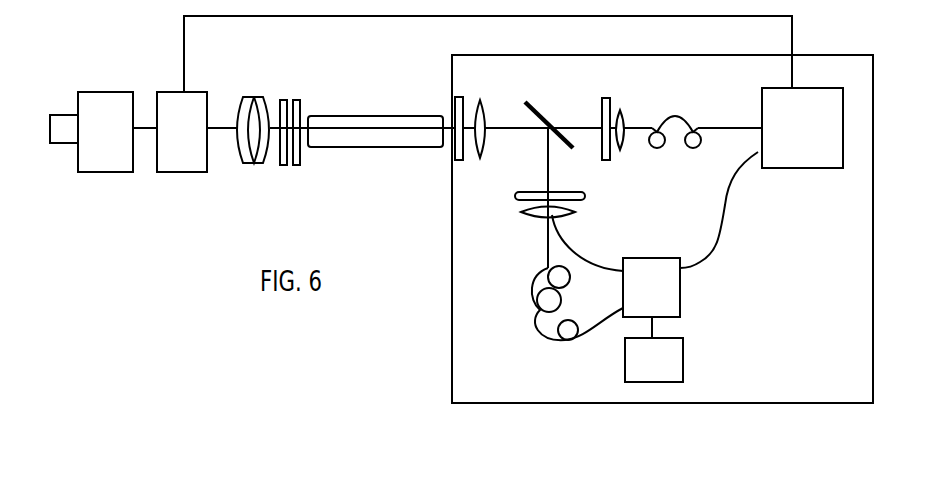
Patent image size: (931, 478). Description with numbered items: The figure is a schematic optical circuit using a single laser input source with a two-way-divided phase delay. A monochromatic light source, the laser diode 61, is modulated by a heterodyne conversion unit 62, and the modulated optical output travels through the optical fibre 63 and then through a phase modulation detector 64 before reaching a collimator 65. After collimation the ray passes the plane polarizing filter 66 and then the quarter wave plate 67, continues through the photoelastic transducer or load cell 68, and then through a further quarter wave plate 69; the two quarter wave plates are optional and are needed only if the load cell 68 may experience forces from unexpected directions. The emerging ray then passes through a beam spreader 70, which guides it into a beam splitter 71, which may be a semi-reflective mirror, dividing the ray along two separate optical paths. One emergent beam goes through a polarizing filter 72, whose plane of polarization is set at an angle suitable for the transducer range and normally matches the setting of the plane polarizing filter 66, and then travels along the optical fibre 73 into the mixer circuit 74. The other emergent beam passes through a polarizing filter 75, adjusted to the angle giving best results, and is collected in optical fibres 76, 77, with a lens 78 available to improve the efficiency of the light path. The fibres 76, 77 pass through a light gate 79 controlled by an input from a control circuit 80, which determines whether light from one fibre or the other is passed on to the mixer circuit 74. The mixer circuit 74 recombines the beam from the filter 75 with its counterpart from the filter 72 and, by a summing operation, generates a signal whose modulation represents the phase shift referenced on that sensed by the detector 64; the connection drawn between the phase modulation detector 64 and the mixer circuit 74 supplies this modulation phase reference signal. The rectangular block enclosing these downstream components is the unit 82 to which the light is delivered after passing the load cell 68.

The laser diode 61 is at (67, 136).
The heterodyne conversion unit 62 is at (103, 128).
The optical fibre 63 is at (148, 132).
The phase modulation detector 64 is at (188, 153).
The collimator 65 is at (257, 155).
The plane polarizing filter 66 is at (282, 102).
The quarter wave plate 67 is at (298, 98).
The photoelastic transducer or load cell 68 is at (365, 138).
The quarter wave plate 69 is at (452, 153).
The beam spreader 70 is at (480, 106).
The beam splitter 71 is at (542, 122).
The polarizing filter 72 is at (598, 122).
The optical fibre 73 is at (673, 110).
The mixer circuit 74 is at (812, 146).
The polarizing filter 75 is at (590, 196).
The optical fibre 76 is at (570, 248).
The optical fibre 77 is at (533, 293).
The lens 78 is at (523, 218).
The light gate 79 is at (657, 288).
The control circuit 80 is at (657, 360).
The unit 82 is at (467, 355).